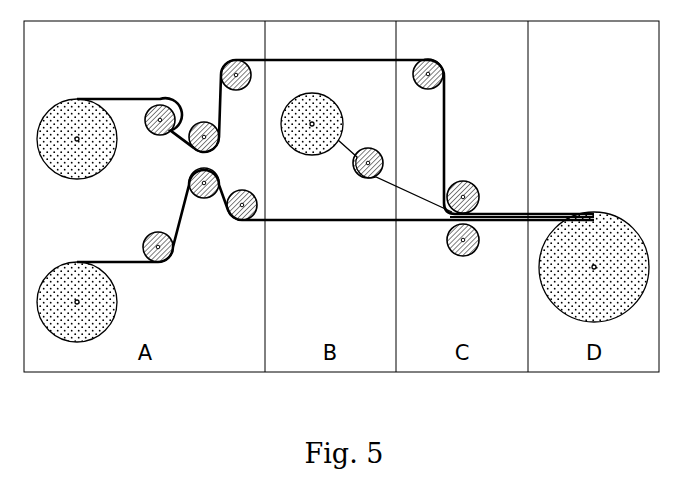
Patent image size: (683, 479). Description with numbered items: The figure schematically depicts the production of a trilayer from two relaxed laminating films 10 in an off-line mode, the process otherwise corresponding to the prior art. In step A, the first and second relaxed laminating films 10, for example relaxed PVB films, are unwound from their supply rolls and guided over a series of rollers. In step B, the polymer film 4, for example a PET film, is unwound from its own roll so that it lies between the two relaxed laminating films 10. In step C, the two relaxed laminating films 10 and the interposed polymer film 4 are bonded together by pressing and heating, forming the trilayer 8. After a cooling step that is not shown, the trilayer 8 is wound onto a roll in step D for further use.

The relaxed laminating film 10 is at (77, 198).
The polymer film 4 is at (327, 124).
The trilayer 8 is at (594, 240).